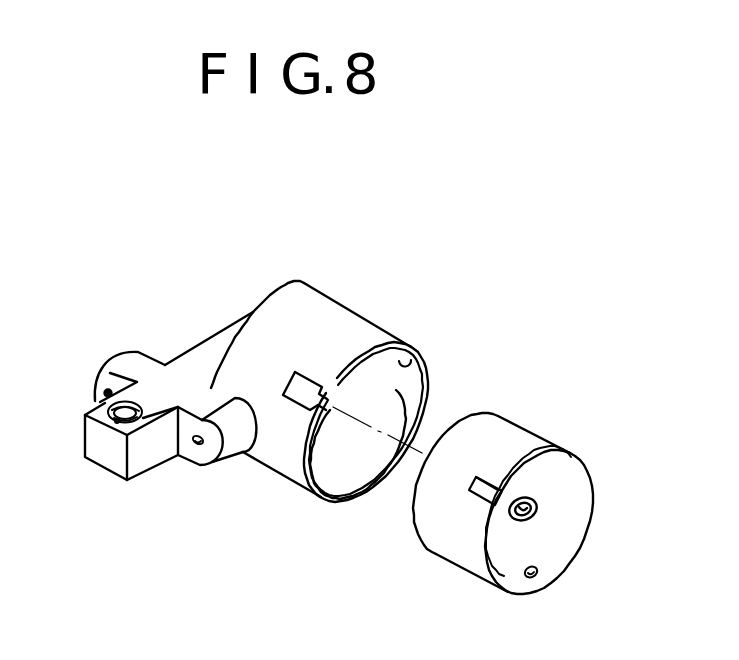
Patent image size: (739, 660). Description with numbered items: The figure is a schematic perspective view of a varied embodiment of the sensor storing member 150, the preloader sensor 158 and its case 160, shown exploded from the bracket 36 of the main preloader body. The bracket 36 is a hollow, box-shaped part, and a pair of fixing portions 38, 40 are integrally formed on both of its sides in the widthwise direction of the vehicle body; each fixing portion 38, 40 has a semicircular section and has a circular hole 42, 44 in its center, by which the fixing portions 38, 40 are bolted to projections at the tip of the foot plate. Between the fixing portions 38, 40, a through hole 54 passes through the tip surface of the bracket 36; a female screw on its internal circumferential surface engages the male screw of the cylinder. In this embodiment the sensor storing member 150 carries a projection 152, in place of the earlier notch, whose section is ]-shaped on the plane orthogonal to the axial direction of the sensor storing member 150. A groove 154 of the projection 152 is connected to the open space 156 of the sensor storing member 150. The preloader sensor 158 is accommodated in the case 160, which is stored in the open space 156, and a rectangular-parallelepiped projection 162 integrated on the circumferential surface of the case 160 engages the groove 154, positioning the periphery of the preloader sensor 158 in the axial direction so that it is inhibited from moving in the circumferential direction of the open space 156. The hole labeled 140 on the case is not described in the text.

The bracket 36 is at (203, 342).
The fixing portion 40 is at (111, 367).
The circular hole 44 is at (98, 398).
The through hole 54 is at (117, 423).
The fixing portion 38 is at (200, 468).
The circular hole 42 is at (193, 446).
The sensor storing member 150 is at (424, 289).
The projection 152 is at (307, 373).
The groove 154 is at (298, 481).
The open space 156 is at (416, 359).
The preloader sensor 158 is at (570, 422).
The case 160 is at (594, 477).
The projection 162 is at (475, 503).
The hole 140 is at (541, 574).